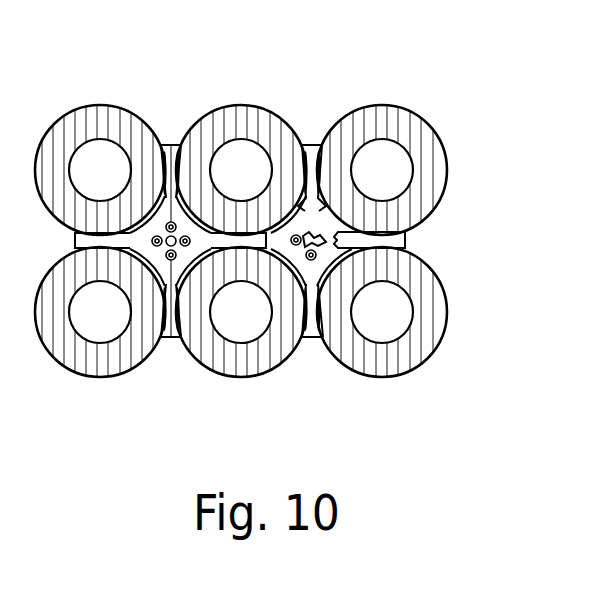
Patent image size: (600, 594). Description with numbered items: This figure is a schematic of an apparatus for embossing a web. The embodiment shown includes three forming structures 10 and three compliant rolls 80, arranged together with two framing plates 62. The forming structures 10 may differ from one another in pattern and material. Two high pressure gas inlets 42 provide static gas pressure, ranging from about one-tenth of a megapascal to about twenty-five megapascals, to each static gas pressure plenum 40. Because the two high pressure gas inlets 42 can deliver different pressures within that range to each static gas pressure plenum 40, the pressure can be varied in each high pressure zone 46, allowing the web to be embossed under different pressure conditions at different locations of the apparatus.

The forming structure 10 is at (241, 104).
The compliant roll 80 is at (88, 103).
The high pressure gas inlet 42 is at (166, 143).
The framing plate 62 is at (312, 143).
The static gas pressure plenum 40 is at (333, 222).
The high pressure zone 46 is at (325, 213).